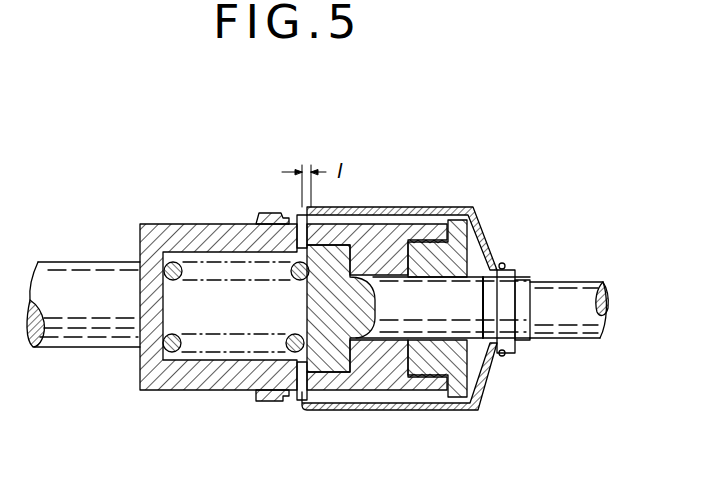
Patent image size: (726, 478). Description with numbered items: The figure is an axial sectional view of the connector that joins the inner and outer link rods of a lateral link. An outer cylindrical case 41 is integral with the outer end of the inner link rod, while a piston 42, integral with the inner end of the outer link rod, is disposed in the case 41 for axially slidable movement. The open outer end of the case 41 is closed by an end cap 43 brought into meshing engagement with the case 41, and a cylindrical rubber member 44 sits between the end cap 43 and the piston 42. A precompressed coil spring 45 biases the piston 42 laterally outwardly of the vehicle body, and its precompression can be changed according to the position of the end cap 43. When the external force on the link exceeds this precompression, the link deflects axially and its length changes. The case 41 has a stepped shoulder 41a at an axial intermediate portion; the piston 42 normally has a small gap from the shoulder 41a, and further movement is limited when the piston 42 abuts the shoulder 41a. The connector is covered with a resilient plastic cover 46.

The outer cylindrical case 41 is at (205, 372).
The stepped shoulder 41a is at (296, 374).
The piston 42 is at (333, 352).
The end cap 43 is at (458, 368).
The cylindrical rubber member 44 is at (388, 358).
The precompressed coil spring 45 is at (180, 266).
The casing 46 is at (444, 209).